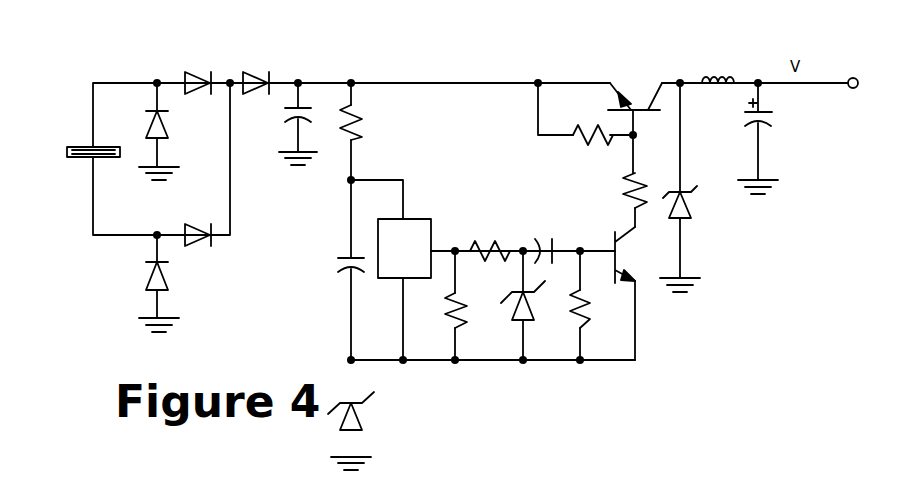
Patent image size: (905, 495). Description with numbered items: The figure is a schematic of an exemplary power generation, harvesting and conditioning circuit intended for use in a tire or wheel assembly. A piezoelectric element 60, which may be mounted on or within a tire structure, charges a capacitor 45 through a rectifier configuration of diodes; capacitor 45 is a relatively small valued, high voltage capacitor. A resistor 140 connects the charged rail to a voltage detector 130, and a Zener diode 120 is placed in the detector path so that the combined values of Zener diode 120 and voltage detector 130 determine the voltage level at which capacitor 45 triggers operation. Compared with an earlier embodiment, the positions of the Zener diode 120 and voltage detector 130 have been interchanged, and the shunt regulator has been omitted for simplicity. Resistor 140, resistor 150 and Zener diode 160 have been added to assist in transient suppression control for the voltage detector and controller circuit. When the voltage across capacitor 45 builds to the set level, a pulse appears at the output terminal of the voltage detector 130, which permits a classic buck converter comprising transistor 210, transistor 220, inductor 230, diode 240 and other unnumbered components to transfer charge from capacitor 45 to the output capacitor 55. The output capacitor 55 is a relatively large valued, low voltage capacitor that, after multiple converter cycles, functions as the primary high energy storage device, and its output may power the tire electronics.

The piezoelectric element 60 is at (82, 143).
The capacitor 45 is at (312, 100).
The resistor 140 is at (360, 107).
The voltage detector 130 is at (413, 218).
The transistor 220 is at (630, 98).
The inductor 230 is at (715, 74).
The diode 240 is at (692, 191).
The transistor 210 is at (614, 237).
The output capacitor 55 is at (770, 112).
The Zener diode 120 is at (367, 416).
The resistor 150 is at (462, 312).
The Zener diode 160 is at (535, 320).